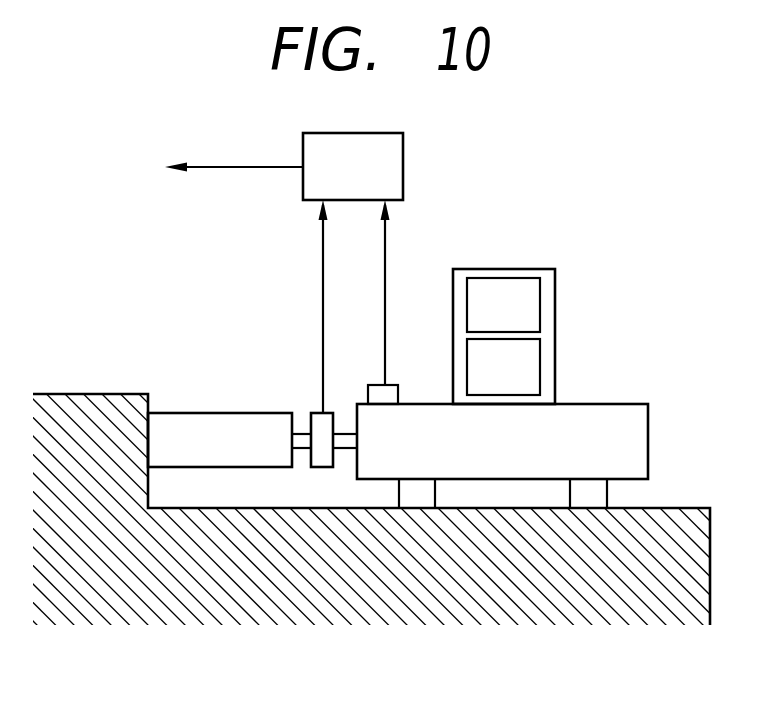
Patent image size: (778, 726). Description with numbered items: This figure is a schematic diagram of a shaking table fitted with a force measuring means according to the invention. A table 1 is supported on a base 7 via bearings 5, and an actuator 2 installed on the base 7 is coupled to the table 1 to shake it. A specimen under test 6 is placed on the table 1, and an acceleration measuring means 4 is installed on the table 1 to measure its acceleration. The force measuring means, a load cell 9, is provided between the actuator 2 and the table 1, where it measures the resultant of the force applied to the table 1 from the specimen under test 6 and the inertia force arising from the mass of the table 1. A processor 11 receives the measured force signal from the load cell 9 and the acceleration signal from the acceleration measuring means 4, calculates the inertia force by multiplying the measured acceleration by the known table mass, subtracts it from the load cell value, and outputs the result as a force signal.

The table 1 is at (649, 416).
The actuator 2 is at (256, 468).
The acceleration measuring means 4 is at (387, 381).
The bearings 5 is at (573, 495).
The specimen under test 6 is at (556, 293).
The base 7 is at (140, 618).
The load cell 9 is at (330, 410).
The processor 11 is at (404, 160).